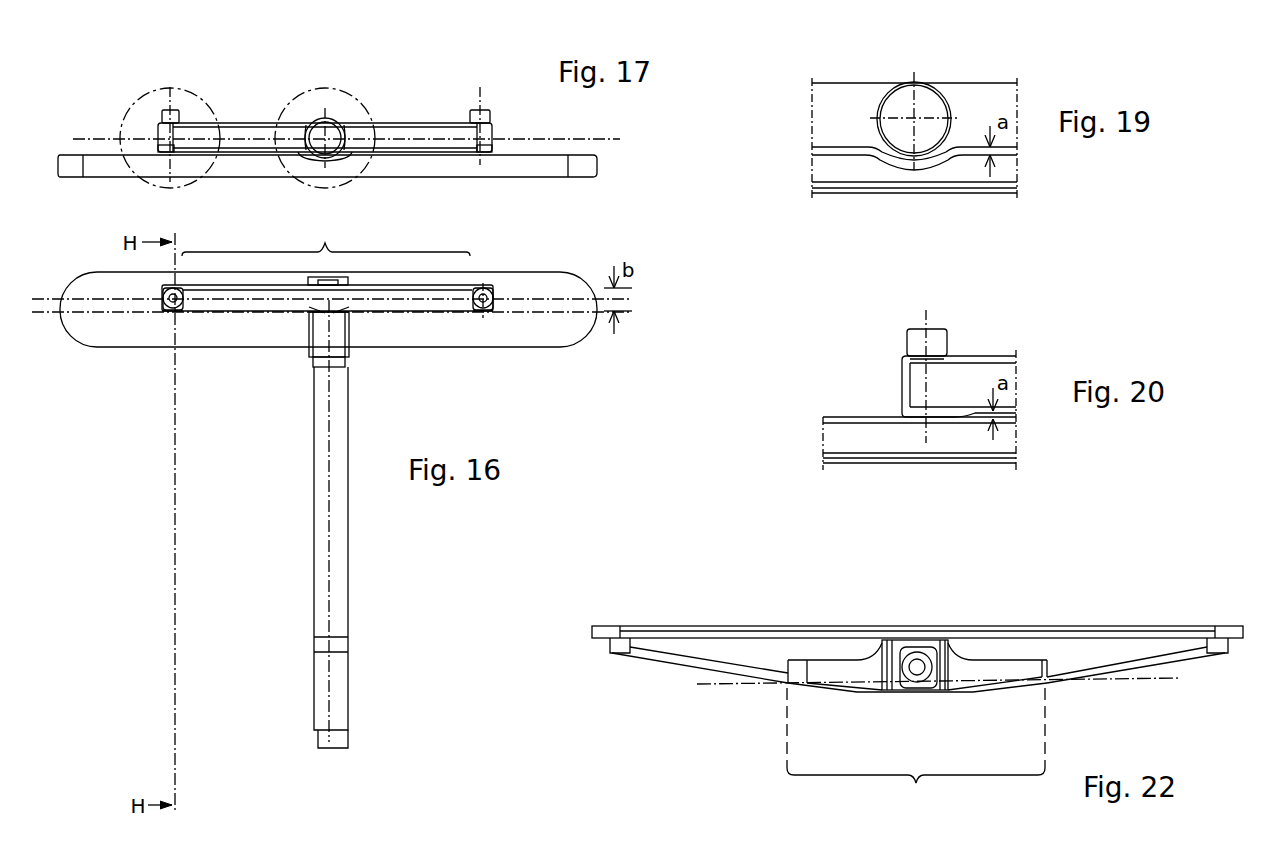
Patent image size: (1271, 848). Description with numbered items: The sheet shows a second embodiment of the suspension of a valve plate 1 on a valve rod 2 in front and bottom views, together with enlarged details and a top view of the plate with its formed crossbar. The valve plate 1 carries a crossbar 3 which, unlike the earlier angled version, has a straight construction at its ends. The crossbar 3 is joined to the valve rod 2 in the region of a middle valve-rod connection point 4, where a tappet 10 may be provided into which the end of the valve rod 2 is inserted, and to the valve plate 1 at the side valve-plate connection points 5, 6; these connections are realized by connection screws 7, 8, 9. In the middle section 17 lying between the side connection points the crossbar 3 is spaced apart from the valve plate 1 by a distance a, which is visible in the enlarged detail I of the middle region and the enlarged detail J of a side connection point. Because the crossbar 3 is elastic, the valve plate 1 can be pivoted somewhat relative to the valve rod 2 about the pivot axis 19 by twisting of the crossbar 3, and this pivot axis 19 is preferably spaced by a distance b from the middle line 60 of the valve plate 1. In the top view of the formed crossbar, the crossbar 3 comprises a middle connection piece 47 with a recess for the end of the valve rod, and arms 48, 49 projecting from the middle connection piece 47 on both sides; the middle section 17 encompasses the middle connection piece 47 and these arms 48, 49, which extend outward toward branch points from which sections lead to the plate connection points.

In FIG. 17, the valve plate 1 is at (583, 152).
In FIG. 16, the valve plate 1 is at (556, 350).
In FIG. 19, the valve plate 1 is at (842, 196).
In FIG. 20, the valve plate 1 is at (868, 413).
In FIG. 22, the valve plate 1 is at (1125, 622).
In FIG. 17, the valve rod 2 is at (331, 117).
In FIG. 16, the valve rod 2 is at (356, 574).
In FIG. 19, the valve rod 2 is at (948, 96).
In FIG. 17, the crossbar 3 is at (428, 121).
In FIG. 16, the crossbar 3 is at (235, 318).
In FIG. 19, the crossbar 3 is at (838, 80).
In FIG. 20, the crossbar 3 is at (990, 350).
In FIG. 22, the crossbar 3 is at (683, 670).
In FIG. 17, the middle valve-rod connection point 4 is at (350, 132).
In FIG. 16, the middle valve-rod connection point 4 is at (305, 360).
In FIG. 17, the side valve-plate connection point 5 is at (153, 148).
In FIG. 16, the side valve-plate connection point 5 is at (165, 316).
In FIG. 17, the side valve-plate connection point 6 is at (502, 147).
In FIG. 16, the side valve-plate connection point 6 is at (488, 316).
In FIG. 16, the connection screw 7 is at (341, 281).
In FIG. 17, the connection screw 8 is at (165, 117).
In FIG. 16, the connection screw 8 is at (166, 292).
In FIG. 20, the connection screw 8 is at (915, 340).
In FIG. 17, the connection screw 9 is at (487, 112).
In FIG. 16, the connection screw 9 is at (491, 287).
In FIG. 16, the tappet 10 is at (338, 343).
In FIG. 16, the middle section 17 is at (326, 236).
In FIG. 22, the middle section 17 is at (916, 751).
In FIG. 17, the pivot axis 19 is at (90, 137).
In FIG. 16, the pivot axis 19 is at (46, 296).
In FIG. 22, the pivot axis 19 is at (1160, 678).
In FIG. 22, the middle connection piece 47 is at (950, 658).
In FIG. 22, the arm 48 is at (832, 674).
In FIG. 22, the arm 49 is at (993, 674).
In FIG. 16, the middle line 60 is at (46, 314).
In FIG. 17, the enlarged detail J is at (210, 106).
In FIG. 17, the enlarged detail I is at (360, 101).